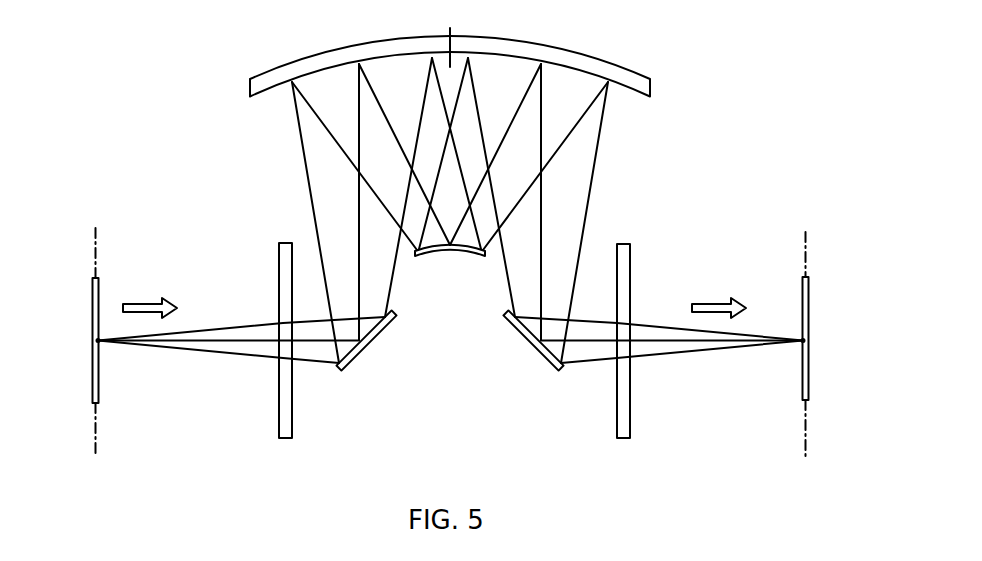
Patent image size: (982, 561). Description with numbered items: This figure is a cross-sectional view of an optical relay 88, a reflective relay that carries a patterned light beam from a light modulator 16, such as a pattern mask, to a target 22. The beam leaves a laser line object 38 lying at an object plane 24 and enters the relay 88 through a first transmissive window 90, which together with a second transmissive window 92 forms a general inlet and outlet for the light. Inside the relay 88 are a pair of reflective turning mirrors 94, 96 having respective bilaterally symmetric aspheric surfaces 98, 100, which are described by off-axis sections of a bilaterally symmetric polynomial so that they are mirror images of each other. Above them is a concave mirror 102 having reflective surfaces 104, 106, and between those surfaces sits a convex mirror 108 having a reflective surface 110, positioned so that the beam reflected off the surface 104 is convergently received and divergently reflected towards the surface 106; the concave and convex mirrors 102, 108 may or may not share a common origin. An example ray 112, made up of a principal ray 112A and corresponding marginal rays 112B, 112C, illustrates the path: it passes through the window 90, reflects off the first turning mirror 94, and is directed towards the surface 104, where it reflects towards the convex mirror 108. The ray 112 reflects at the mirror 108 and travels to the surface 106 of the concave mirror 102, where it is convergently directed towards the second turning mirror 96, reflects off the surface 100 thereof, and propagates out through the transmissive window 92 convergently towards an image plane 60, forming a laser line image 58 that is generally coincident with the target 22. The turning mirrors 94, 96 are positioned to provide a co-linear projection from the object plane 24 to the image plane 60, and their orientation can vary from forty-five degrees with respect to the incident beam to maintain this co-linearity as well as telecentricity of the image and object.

The light modulator 16 is at (92, 317).
The target 22 is at (803, 313).
The object plane 24 is at (98, 252).
The laser line object 38 is at (99, 342).
The laser line image 58 is at (801, 342).
The image plane 60 is at (808, 252).
The optical relay 88 is at (160, 110).
The transmissive window 90 is at (279, 402).
The transmissive window 92 is at (617, 407).
The turning mirror 94 is at (375, 346).
The turning mirror 96 is at (523, 340).
The aspheric surface 98 is at (371, 315).
The aspheric surface 100 is at (529, 316).
The concave mirror 102 is at (270, 76).
The reflective surface 104 is at (330, 72).
The reflective surface 106 is at (570, 72).
The convex mirror 108 is at (432, 255).
The reflective surface 110 is at (440, 244).
The ray 112 is at (131, 367).
The principal ray 112A is at (242, 342).
The marginal ray 112B is at (167, 348).
The marginal ray 112C is at (222, 327).